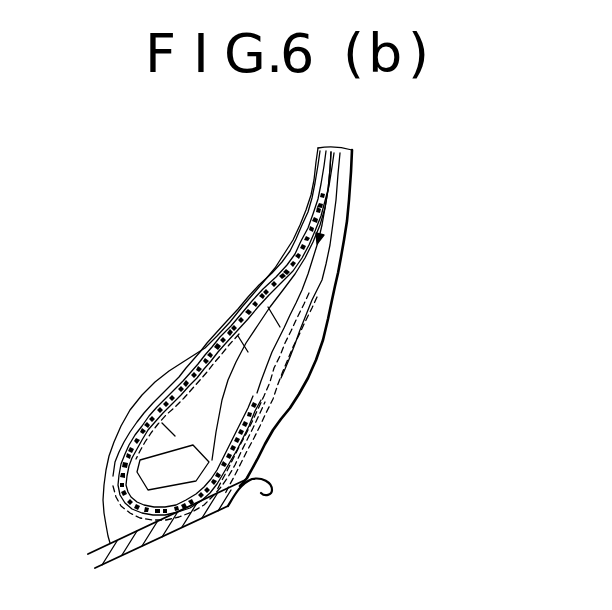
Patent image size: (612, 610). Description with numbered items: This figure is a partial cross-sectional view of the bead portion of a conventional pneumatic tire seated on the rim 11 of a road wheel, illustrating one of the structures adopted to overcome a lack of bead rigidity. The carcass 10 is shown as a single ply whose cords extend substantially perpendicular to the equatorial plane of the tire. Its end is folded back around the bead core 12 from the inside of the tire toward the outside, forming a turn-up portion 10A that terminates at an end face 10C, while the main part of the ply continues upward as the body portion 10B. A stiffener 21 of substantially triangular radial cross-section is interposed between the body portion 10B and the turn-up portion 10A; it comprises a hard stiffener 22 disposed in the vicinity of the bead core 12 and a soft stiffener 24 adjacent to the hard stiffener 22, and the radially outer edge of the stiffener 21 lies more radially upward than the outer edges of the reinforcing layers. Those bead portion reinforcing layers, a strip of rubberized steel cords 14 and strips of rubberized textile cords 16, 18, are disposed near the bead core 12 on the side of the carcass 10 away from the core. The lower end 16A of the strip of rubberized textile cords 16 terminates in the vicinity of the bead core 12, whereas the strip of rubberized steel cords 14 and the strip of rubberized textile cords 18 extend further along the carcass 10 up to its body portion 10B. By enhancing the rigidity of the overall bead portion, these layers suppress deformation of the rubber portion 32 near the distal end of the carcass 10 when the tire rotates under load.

The carcass 10 is at (269, 294).
The turn-up portion 10A is at (233, 448).
The body portion 10B is at (204, 377).
The end face 10C is at (262, 378).
The rim 11 is at (200, 520).
The bead core 12 is at (168, 468).
The strip of rubberized steel cords 14 is at (254, 423).
The strip of rubberized textile cords 16 is at (313, 320).
The lower end 16A is at (247, 497).
The strip of rubberized textile cords 18 is at (330, 293).
The stiffener 21 is at (350, 194).
The hard stiffener 22 is at (160, 416).
The soft stiffener 24 is at (232, 318).
The rubber portion 32 is at (338, 226).